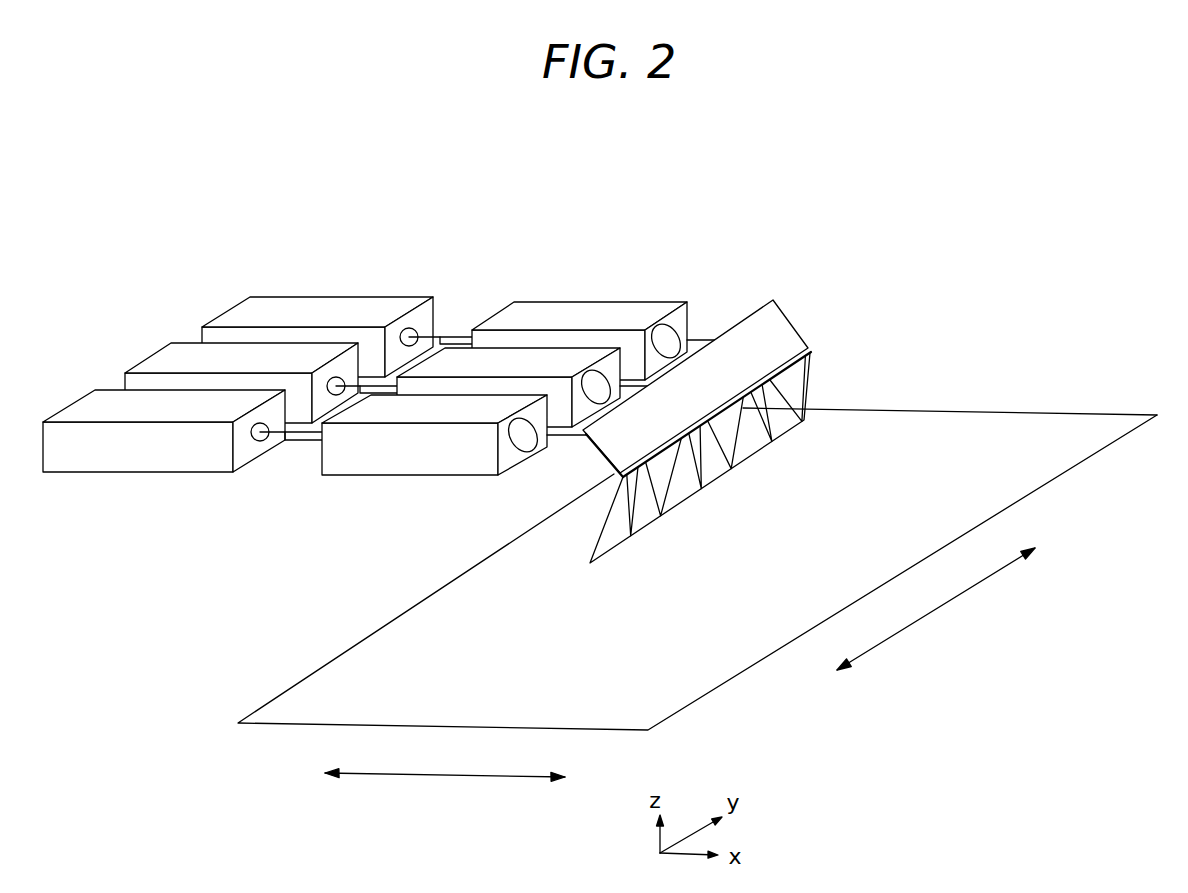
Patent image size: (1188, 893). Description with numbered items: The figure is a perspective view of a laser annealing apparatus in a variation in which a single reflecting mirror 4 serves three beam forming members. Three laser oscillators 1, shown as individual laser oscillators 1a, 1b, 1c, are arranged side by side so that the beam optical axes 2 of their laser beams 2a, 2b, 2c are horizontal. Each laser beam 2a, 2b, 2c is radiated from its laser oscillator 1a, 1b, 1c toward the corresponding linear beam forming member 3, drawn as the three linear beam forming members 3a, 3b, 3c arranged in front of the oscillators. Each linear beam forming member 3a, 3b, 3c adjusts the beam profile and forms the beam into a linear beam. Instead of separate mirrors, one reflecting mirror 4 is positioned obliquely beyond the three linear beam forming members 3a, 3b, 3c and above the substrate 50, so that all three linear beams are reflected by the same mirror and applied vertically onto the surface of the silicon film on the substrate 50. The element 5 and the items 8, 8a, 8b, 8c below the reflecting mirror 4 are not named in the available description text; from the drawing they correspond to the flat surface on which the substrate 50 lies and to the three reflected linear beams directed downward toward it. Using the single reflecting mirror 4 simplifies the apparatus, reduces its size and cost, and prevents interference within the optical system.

The laser oscillators 1 is at (230, 336).
The laser oscillator 1a is at (85, 398).
The laser oscillator 1b is at (162, 353).
The laser oscillator 1c is at (238, 307).
The beam optical axes 2 is at (382, 360).
The laser beam 2a is at (300, 437).
The laser beam 2b is at (374, 393).
The laser beam 2c is at (462, 337).
The linear beam forming member 3 is at (518, 348).
The linear beam forming member 3a is at (405, 462).
The linear beam forming member 3b is at (545, 352).
The linear beam forming member 3c is at (655, 303).
The reflecting mirror 4 is at (790, 321).
The recording medium 5 is at (697, 562).
The substrate 50 is at (966, 430).
The light beams 8 is at (733, 476).
The light beam 8a is at (643, 533).
The light beam 8b is at (723, 485).
The light beam 8c is at (783, 440).